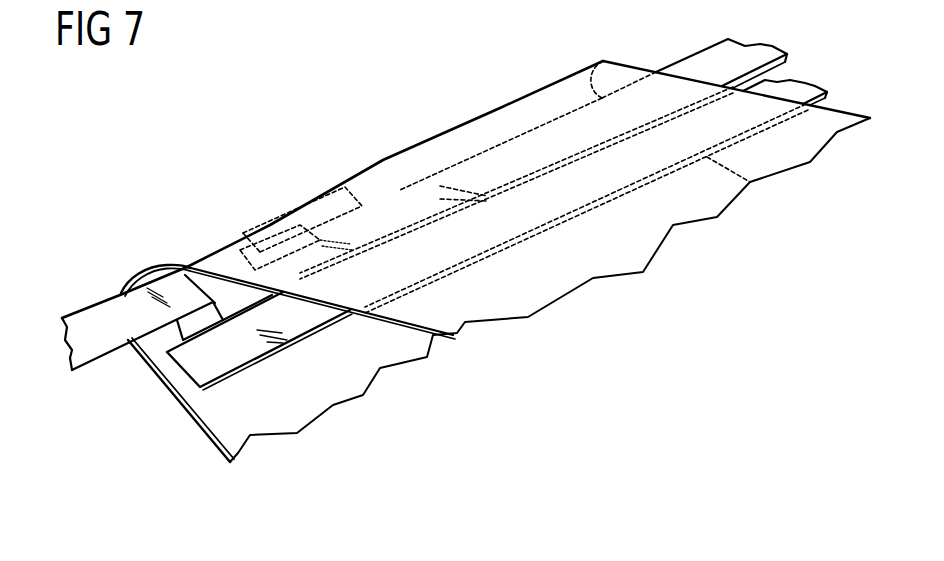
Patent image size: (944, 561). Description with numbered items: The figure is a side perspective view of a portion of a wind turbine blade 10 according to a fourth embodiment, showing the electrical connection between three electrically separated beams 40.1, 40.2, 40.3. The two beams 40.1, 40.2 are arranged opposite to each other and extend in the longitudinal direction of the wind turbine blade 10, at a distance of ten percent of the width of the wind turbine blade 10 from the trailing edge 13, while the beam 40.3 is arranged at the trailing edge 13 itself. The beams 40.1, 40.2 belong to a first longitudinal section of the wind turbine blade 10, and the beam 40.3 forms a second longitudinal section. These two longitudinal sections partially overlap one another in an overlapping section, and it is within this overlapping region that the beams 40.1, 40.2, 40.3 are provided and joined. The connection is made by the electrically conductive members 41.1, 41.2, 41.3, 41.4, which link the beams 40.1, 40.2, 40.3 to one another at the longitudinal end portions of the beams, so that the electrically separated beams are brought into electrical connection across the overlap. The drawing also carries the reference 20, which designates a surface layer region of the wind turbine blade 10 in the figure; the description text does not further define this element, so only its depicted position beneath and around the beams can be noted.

The trailing edge 13 is at (447, 127).
The wind turbine blade 10 is at (203, 435).
The second layer 20 is at (328, 369).
The beam 40.1 is at (697, 68).
The beam 40.2 is at (808, 90).
The beam 40.3 is at (88, 318).
The electrically conductive member 41.1 is at (352, 187).
The electrically conductive member 41.2 is at (240, 240).
The electrically conductive member 41.3 is at (347, 284).
The electrically conductive member 41.4 is at (170, 292).